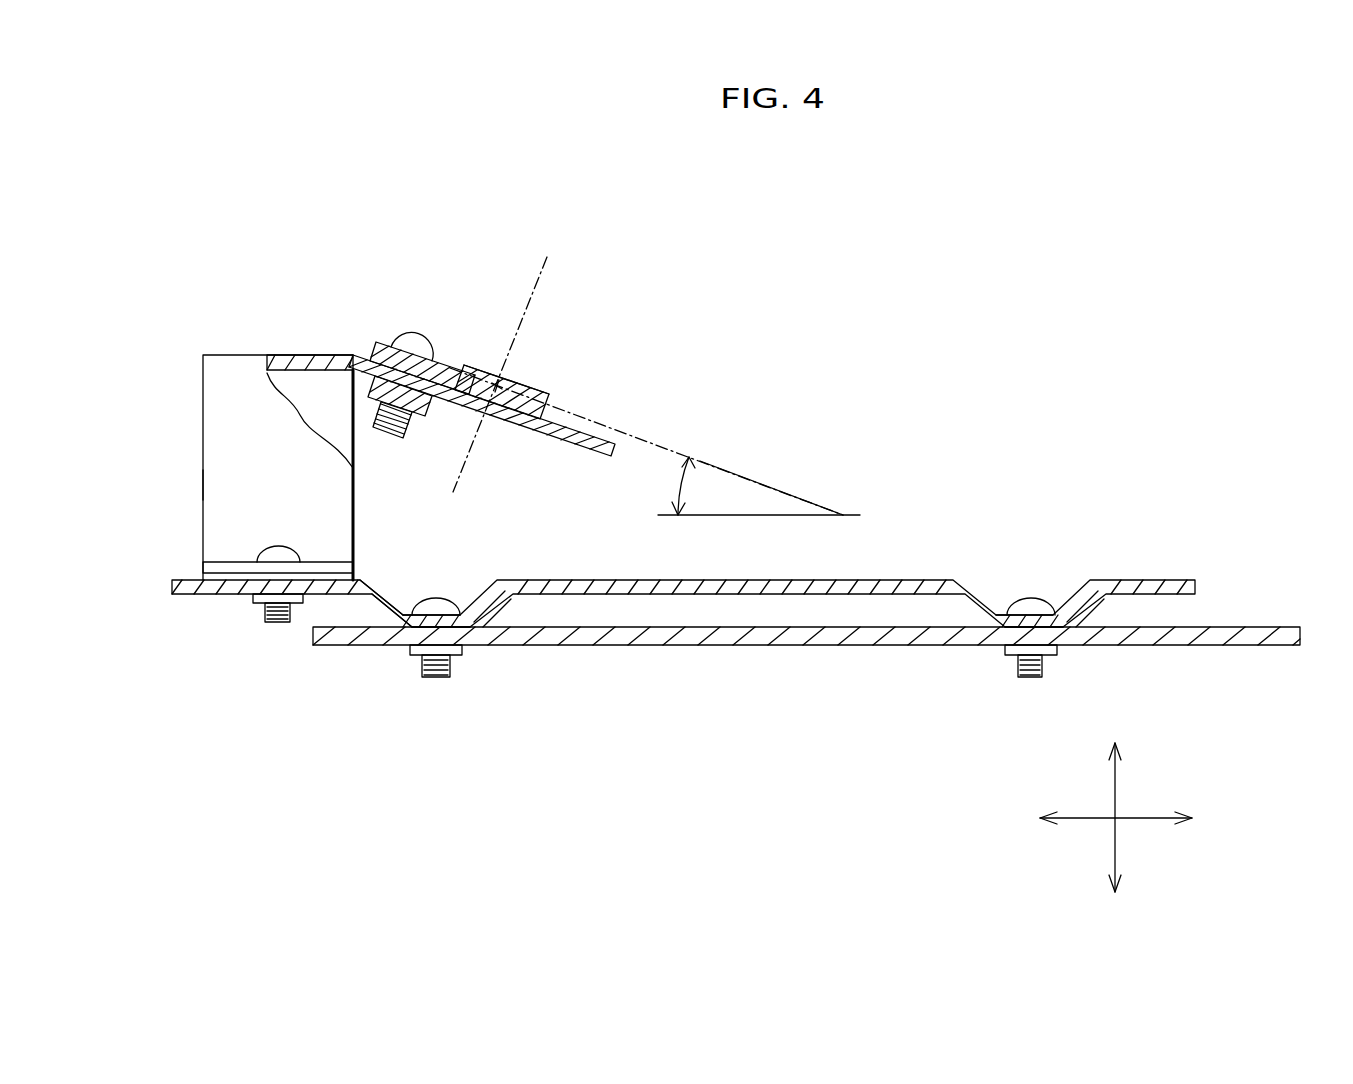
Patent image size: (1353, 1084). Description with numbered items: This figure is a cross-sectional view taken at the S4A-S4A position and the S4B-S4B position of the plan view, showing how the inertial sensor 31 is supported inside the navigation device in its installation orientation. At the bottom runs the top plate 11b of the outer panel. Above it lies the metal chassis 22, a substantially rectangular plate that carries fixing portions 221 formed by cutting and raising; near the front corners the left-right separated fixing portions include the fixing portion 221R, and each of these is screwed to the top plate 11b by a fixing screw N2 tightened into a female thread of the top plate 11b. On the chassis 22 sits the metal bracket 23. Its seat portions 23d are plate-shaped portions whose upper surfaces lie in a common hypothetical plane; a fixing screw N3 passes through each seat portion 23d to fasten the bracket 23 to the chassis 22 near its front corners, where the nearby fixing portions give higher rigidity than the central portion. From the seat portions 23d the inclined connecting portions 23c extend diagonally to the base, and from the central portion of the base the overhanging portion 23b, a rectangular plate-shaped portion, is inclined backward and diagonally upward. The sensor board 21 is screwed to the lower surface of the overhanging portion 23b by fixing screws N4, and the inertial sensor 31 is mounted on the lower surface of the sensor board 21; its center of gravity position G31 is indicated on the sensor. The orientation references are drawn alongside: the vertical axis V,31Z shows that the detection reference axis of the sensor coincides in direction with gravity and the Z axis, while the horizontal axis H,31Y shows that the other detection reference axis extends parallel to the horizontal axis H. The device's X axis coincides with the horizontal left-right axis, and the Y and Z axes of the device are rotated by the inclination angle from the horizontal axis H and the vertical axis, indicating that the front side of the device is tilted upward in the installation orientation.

The chassis 22 is at (903, 578).
The fixing portion 221 is at (1086, 575).
The right front fixing portion 221R is at (478, 567).
The top plate 11b is at (823, 646).
The fixing screw N2 is at (440, 597).
The bracket 23 is at (203, 413).
The inclined connecting portion 23c is at (215, 480).
The seat portion 23d is at (232, 558).
The fixing screw N3 is at (270, 541).
The sensor board 21 is at (566, 443).
The overhanging portion 23b is at (457, 413).
The fixing screw N4 is at (405, 341).
The inertial sensor 31 is at (487, 362).
The center of gravity position G31 is at (530, 376).
The vertical axis and detection reference axis 31Z V,31Z is at (540, 276).
The horizontal axis and detection reference axis 31Y H,31Y is at (645, 438).
The horizontal axis H is at (727, 468).
The X-axis X is at (845, 512).
The section position S4B-S4B is at (358, 298).
The section position S4A-S4A is at (285, 688).
The Z-axis Z is at (1118, 782).
The Y-axis Y is at (1143, 820).